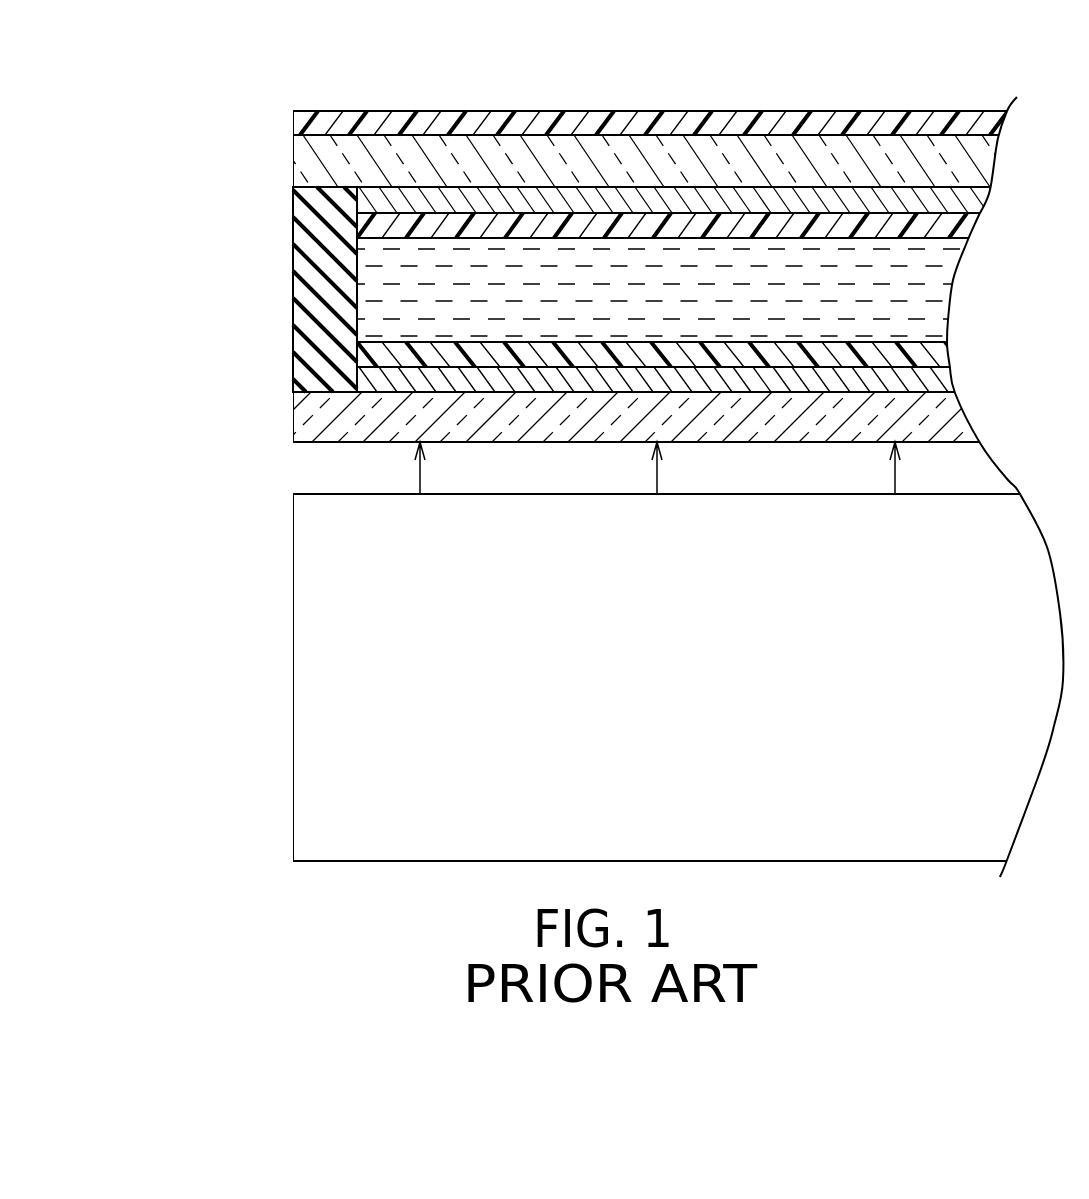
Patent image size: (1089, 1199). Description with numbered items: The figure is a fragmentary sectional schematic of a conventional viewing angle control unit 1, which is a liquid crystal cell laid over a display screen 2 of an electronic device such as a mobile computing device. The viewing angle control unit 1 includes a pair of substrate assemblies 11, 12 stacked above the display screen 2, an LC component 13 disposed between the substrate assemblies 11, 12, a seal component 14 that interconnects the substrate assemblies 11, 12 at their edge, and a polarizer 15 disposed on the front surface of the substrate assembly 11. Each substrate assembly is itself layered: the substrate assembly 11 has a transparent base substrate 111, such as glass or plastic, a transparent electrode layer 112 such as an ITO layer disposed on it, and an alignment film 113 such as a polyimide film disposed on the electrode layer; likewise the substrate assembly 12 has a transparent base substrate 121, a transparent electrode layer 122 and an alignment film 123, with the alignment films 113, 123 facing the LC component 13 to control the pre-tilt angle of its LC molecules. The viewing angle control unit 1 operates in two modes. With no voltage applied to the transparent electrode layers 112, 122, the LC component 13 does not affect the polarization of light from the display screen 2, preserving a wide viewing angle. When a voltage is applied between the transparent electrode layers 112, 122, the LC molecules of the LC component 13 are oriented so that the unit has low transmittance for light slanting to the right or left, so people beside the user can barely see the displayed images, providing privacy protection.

The viewing angle control unit 1 is at (598, 281).
The substrate assembly 11 is at (669, 186).
The transparent base substrate 111 is at (669, 161).
The transparent electrode layer 112 is at (721, 200).
The alignment film 113 is at (723, 225).
The substrate assembly 12 is at (675, 392).
The transparent base substrate 121 is at (675, 417).
The transparent electrode layer 122 is at (689, 379).
The alignment film 123 is at (722, 354).
The LC component 13 is at (711, 295).
The seal component 14 is at (318, 277).
The polarizer 15 is at (687, 123).
The display screen 2 is at (318, 657).